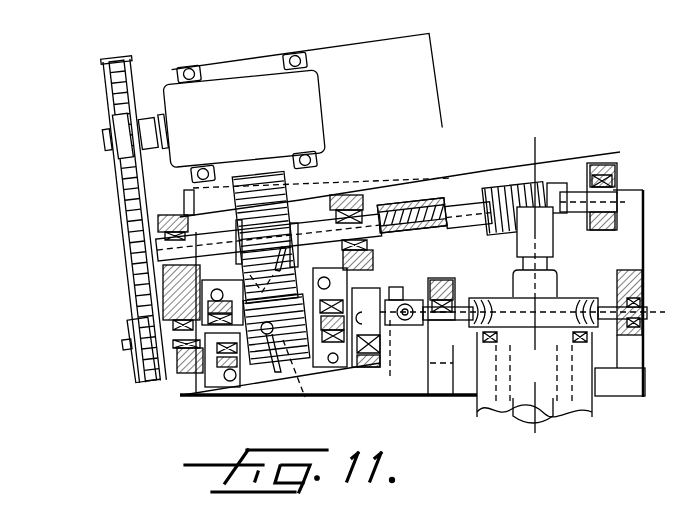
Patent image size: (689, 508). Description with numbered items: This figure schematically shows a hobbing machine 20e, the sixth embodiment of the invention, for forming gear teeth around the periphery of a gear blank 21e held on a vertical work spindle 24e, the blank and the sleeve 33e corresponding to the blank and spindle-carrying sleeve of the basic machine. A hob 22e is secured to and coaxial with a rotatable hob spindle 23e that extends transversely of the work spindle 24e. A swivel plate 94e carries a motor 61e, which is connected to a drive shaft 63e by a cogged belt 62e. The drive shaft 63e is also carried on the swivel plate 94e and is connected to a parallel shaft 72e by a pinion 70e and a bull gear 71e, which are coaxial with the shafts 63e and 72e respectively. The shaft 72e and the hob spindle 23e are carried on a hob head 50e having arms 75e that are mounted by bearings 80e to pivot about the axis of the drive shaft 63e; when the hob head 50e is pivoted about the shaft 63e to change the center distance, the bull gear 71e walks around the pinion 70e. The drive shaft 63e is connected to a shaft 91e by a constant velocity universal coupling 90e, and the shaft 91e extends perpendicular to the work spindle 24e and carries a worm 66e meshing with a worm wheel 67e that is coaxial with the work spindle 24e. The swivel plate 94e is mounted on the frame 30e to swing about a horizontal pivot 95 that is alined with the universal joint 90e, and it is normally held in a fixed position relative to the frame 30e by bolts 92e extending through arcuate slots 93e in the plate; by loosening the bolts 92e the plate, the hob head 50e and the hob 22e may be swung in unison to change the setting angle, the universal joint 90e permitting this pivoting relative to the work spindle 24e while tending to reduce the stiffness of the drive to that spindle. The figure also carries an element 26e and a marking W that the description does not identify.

The motor 61e is at (230, 88).
The swivel plate 94e is at (420, 62).
The hobbing machine 20e is at (458, 96).
The cogged belt 62e is at (160, 173).
The bull gear 71e is at (262, 175).
The arms 75e is at (352, 198).
The hob head 50e is at (408, 180).
The hob spindle 23e is at (463, 197).
The hob 22e is at (538, 270).
The shaft 21e is at (588, 165).
The parallel shaft 72e is at (315, 227).
The constant velocity universal coupling 90e is at (395, 283).
The shaft 91e is at (455, 300).
The work spindle 24e is at (644, 262).
The arcuate slots 93e is at (250, 277).
The drive shaft 63e is at (143, 377).
The bearings 80e is at (182, 375).
The pinion 70e is at (262, 365).
The bolts 92e is at (288, 376).
The horizontal pivot 95 is at (428, 372).
The frame 30e is at (440, 397).
The worm 66e is at (508, 328).
The worm wheel 67e is at (560, 333).
The output member 33e is at (568, 412).
The output shaft 26e is at (537, 448).
The rotation direction W is at (537, 150).